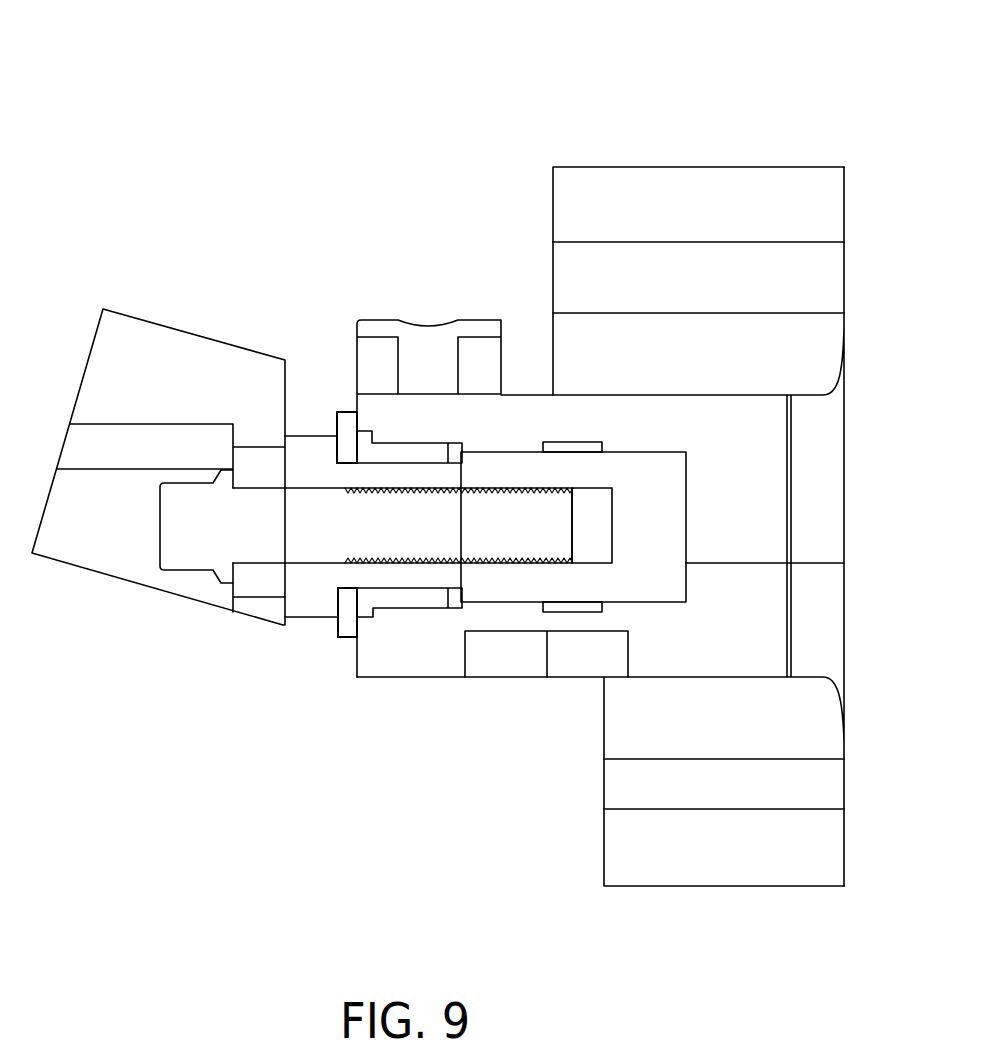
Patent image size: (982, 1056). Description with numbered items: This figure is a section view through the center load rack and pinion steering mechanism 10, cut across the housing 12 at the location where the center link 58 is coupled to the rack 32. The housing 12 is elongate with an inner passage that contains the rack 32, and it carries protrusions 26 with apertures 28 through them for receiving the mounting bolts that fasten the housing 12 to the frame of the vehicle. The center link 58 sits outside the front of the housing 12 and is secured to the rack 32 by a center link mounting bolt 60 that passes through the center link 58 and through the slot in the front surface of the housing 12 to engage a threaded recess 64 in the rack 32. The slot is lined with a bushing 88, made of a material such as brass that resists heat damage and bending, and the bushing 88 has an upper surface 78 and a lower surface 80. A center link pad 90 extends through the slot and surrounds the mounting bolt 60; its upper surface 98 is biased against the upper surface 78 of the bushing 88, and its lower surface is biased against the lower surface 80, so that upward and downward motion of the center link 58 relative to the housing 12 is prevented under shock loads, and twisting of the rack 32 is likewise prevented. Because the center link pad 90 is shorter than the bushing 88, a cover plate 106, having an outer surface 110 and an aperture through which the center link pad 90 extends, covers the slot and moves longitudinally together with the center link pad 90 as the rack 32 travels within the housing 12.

The center load rack and pinion steering mechanism 10 is at (237, 108).
The housing 12 is at (762, 492).
The protrusions 26 is at (818, 178).
The apertures 28 is at (828, 280).
The rack 32 is at (535, 585).
The center link 58 is at (77, 550).
The center link mounting bolts 60 is at (210, 542).
The threaded recesses 64 is at (592, 538).
The upper surface of the bushing 78 is at (427, 471).
The lower surface of the bushing 80 is at (425, 585).
The bushing 88 is at (372, 597).
The center link pad 90 is at (310, 595).
The upper surface of the center link pad 98 is at (402, 460).
The cover plate 106 is at (348, 411).
The outer surface of the cover plate 110 is at (398, 594).